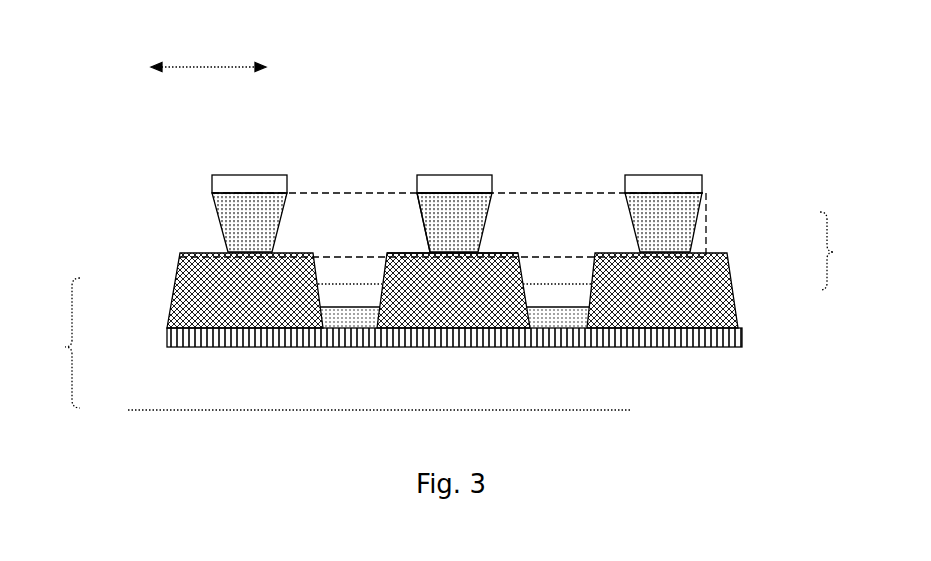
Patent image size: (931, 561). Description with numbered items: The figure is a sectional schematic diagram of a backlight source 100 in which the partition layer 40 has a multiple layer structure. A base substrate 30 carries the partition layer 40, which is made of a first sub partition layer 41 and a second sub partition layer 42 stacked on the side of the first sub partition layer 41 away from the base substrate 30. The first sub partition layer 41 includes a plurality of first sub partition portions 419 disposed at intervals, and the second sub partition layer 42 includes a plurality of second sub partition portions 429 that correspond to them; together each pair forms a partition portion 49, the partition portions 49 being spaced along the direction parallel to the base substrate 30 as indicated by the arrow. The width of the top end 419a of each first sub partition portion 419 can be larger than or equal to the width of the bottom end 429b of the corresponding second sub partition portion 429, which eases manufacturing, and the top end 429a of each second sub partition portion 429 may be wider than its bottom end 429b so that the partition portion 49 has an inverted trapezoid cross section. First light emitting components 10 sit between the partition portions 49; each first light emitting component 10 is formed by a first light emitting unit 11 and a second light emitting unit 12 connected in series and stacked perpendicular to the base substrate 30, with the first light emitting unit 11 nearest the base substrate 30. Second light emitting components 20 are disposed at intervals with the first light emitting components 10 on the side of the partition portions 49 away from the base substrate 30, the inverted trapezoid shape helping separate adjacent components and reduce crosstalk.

The backlight source 100 is at (425, 84).
The first light emitting component 10 is at (360, 154).
The first light emitting unit 11 is at (345, 313).
The second light emitting unit 12 is at (360, 284).
The second light emitting component 20 is at (242, 185).
The base substrate 30 is at (683, 337).
The partition layer 40 is at (53, 343).
The first sub partition layer 41 is at (358, 366).
The second sub partition layer 42 is at (210, 233).
The partition portion 49 is at (846, 251).
The first sub partition portion 419 is at (665, 302).
The top end of first sub partition portion 419a is at (495, 252).
The second sub partition portion 429 is at (665, 231).
The top end of second sub partition portion 429a is at (460, 193).
The bottom end of second sub partition portion 429b is at (441, 247).